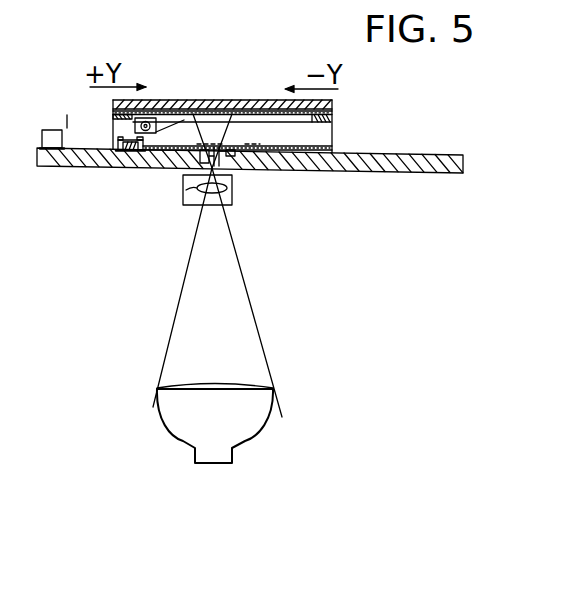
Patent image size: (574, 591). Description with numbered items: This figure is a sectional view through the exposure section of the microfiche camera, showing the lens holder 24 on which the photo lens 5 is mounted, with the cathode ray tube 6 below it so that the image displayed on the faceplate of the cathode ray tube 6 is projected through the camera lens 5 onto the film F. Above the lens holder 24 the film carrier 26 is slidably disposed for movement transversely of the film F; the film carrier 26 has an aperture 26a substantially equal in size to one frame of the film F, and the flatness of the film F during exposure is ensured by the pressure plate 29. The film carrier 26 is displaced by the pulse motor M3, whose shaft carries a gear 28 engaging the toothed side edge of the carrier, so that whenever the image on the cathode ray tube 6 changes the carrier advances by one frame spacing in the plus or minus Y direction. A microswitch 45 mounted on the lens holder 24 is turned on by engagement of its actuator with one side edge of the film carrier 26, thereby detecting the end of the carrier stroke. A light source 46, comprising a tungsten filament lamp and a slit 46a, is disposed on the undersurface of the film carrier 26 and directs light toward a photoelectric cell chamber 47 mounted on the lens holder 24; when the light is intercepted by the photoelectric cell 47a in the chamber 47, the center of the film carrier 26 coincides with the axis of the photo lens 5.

The camera lens 5 is at (183, 190).
The cathode ray tube 6 is at (240, 437).
The lens holder 24 is at (402, 171).
The film carrier 26 is at (333, 120).
The aperture 26a is at (262, 124).
The gear 28 is at (243, 158).
The pressure plate 29 is at (250, 101).
The microswitch 45 is at (52, 130).
The light source 46 is at (148, 124).
The slit 46a is at (193, 113).
The photoelectric cell chamber 47 is at (132, 158).
The photoelectric cell 47a is at (124, 150).
The film F is at (273, 101).
The pulse motor M3 is at (190, 201).